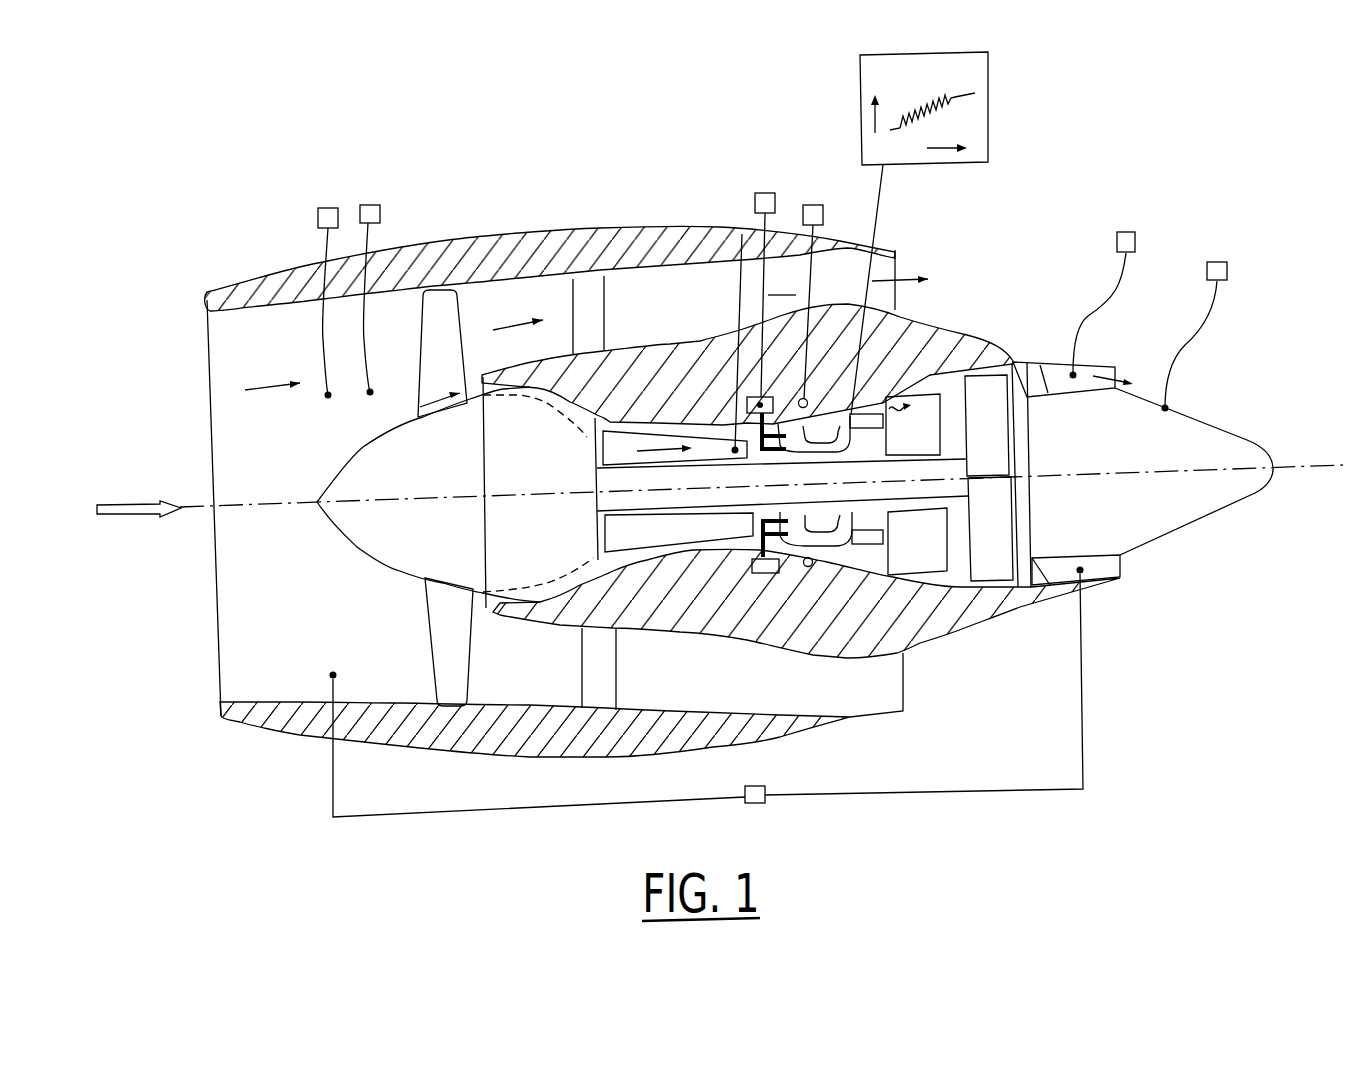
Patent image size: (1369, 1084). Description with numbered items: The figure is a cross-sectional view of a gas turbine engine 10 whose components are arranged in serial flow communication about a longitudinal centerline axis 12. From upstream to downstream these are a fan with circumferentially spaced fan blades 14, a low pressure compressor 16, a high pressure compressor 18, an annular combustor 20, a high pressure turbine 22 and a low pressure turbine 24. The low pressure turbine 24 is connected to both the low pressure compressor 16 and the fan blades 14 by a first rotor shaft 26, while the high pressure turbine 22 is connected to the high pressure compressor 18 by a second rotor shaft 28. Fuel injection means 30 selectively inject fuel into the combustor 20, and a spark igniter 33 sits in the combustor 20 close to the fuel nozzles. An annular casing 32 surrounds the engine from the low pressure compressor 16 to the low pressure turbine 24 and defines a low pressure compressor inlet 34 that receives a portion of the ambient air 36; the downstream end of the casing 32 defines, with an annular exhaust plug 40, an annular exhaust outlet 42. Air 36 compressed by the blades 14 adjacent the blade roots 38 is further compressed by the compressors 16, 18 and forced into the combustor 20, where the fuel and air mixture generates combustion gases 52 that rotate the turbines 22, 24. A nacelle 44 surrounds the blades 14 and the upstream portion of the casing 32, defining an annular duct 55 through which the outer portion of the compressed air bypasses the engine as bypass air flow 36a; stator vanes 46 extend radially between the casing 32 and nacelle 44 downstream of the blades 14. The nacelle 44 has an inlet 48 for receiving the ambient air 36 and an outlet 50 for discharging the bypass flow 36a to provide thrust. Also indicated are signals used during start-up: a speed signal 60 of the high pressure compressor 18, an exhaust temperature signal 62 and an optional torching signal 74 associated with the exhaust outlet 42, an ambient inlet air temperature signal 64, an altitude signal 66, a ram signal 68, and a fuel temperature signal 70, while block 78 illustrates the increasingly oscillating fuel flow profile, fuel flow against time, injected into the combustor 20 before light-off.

The gas turbine engine 10 is at (1023, 250).
The longitudinal centerline axis 12 is at (1283, 467).
The fan blades 14 is at (426, 643).
The low pressure compressor 16 is at (548, 548).
The high pressure compressor 18 is at (628, 442).
The annular combustor 20 is at (824, 548).
The high pressure turbine 22 is at (900, 549).
The low pressure turbine 24 is at (979, 553).
The first rotor shaft 26 is at (957, 495).
The second rotor shaft 28 is at (752, 517).
The fuel injection means 30 is at (767, 574).
The annular casing 32 is at (993, 337).
The spark igniter 33 is at (826, 418).
The low pressure compressor inlet 34 is at (492, 611).
The ambient air 36 is at (142, 501).
The bypass air flow 36a is at (510, 283).
The blade roots 38 is at (444, 583).
The annular exhaust plug 40 is at (1188, 417).
The annular exhaust outlet 42 is at (1121, 570).
The nacelle 44 is at (677, 243).
The stator vanes 46 is at (594, 292).
The inlet 48 is at (208, 455).
The outlet 50 is at (897, 265).
The combustion gases 52 is at (904, 454).
The annular duct 55 is at (556, 298).
The speed signal 60 is at (765, 193).
The exhaust temperature signal 62 is at (1126, 232).
The temperature signal 64 is at (328, 208).
The altitude signal 66 is at (368, 205).
The ram signal 68 is at (756, 786).
The fuel temperature signal 70 is at (813, 205).
The torching signal 74 is at (1217, 262).
The block illustrating fuel flow profile 78 is at (988, 130).